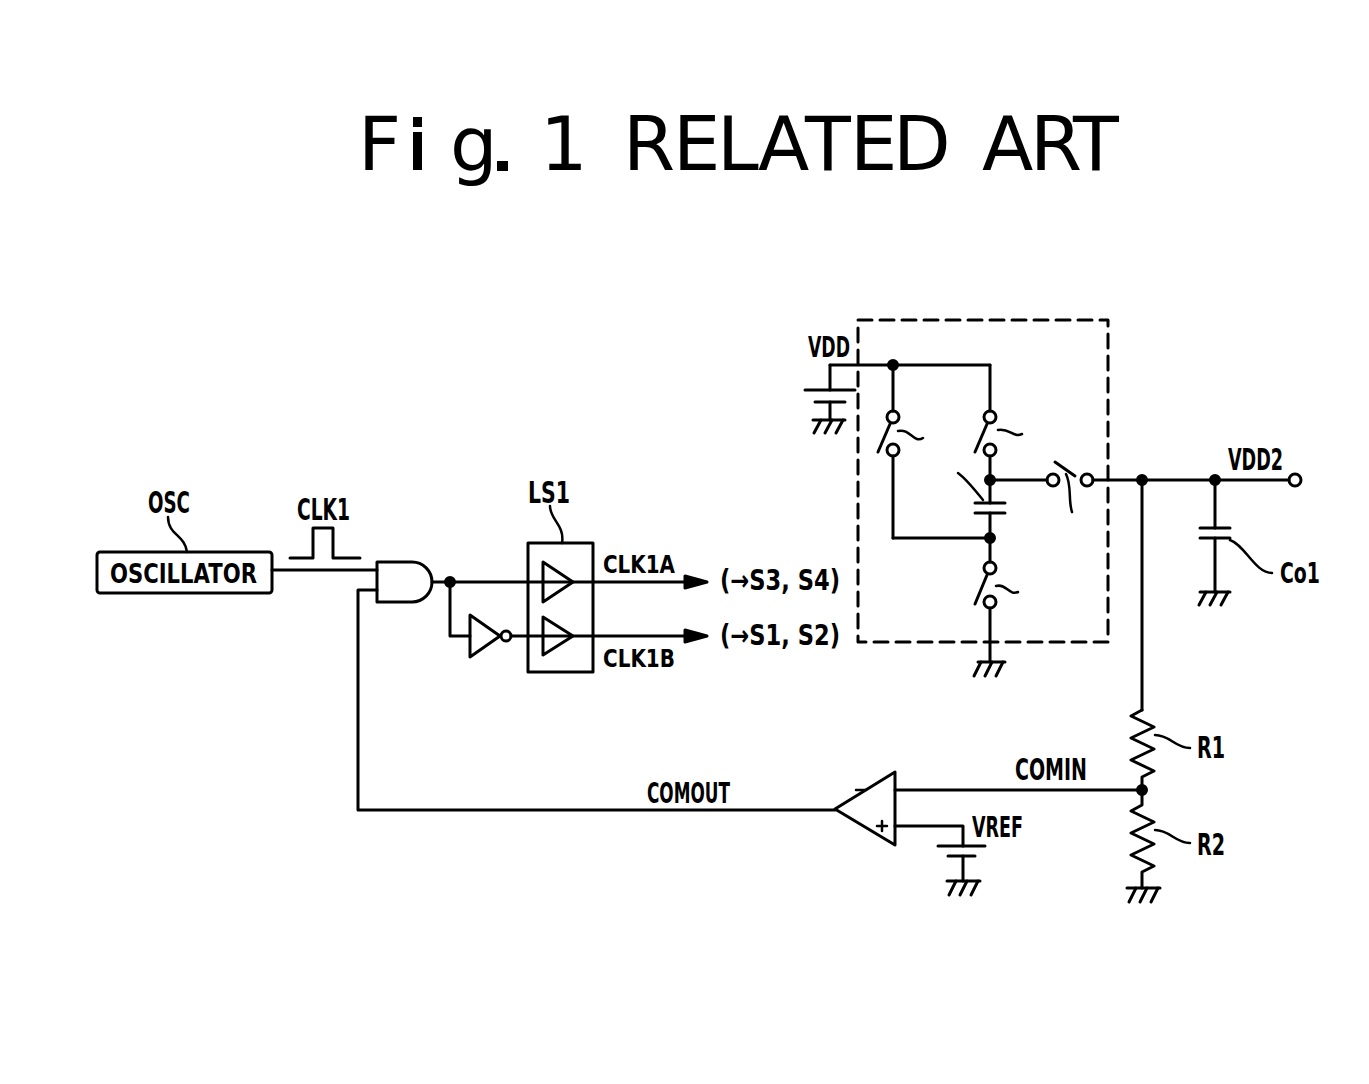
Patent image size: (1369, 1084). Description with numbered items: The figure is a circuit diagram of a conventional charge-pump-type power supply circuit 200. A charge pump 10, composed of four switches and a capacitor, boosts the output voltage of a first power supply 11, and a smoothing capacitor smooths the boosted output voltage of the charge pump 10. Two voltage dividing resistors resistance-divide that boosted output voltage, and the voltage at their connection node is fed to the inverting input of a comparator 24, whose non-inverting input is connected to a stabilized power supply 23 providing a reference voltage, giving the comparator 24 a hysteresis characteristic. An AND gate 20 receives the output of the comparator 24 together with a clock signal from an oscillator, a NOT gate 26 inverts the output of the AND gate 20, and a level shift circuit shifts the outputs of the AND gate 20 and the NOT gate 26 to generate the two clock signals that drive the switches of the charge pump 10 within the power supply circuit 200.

The charge pump 10 is at (975, 320).
The first power supply 11 is at (822, 384).
The AND gate 20 is at (400, 561).
The stabilized power supply 23 is at (977, 856).
The comparator 24 is at (867, 786).
The NOT gate 26 is at (470, 650).
The power supply circuit 200 is at (885, 926).